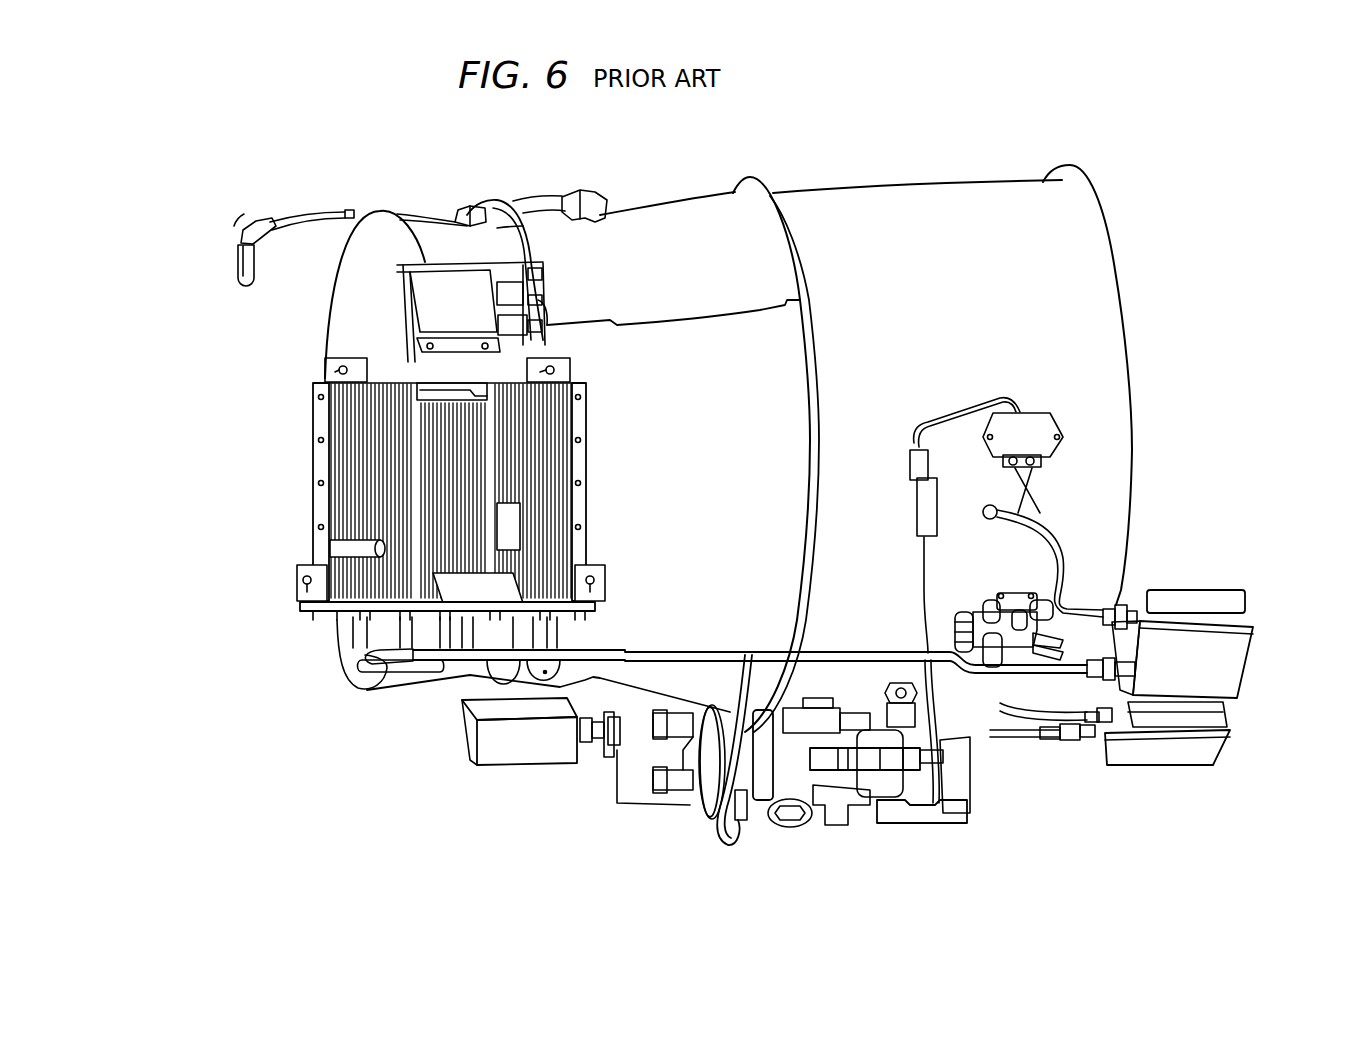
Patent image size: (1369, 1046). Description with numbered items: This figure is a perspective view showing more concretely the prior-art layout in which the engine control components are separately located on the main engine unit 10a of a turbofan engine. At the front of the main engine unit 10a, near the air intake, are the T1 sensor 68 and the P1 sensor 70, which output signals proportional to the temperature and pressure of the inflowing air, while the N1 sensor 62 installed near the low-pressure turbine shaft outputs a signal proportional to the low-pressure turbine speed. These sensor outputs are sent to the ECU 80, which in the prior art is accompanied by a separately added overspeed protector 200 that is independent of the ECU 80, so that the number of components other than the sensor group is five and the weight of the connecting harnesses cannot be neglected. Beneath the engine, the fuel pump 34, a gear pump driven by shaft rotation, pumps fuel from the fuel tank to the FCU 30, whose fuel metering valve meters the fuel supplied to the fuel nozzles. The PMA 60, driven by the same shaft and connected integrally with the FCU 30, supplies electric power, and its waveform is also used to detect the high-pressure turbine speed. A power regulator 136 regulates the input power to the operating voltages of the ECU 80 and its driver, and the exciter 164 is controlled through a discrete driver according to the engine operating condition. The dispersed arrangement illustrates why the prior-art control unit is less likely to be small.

The main engine unit 10a is at (980, 175).
The T1 sensor 68 is at (228, 206).
The P1 sensor 70 is at (378, 218).
The N1 sensor 62 is at (608, 205).
The overspeed protector 200 is at (443, 293).
The ECU 80 is at (298, 515).
The power regulator 136 is at (509, 746).
The PMA 60 is at (716, 840).
The fuel pump 34 is at (794, 842).
The FCU 30 is at (915, 842).
The exciter 164 is at (1213, 745).